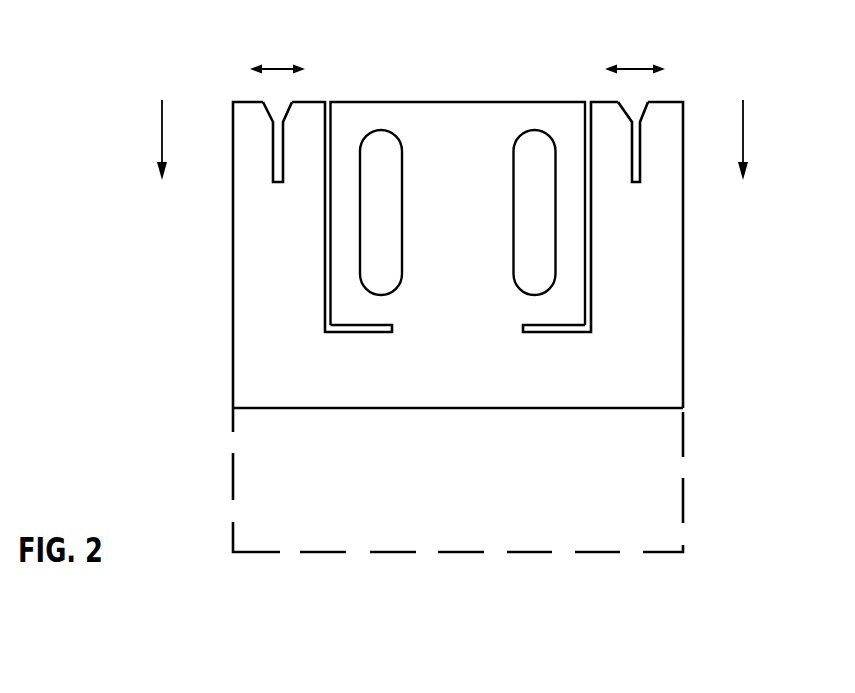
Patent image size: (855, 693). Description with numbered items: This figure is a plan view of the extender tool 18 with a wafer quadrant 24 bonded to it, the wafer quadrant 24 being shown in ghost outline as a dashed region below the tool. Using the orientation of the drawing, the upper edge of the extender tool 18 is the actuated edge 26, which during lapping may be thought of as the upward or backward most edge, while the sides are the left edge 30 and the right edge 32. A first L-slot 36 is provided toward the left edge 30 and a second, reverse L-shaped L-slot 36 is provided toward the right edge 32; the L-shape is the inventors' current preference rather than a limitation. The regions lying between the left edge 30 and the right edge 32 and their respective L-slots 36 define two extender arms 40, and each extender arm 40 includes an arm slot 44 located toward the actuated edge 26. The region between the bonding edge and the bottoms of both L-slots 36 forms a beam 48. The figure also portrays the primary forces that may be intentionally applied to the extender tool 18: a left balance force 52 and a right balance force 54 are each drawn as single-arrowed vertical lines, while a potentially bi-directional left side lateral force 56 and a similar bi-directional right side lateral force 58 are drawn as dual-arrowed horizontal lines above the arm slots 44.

The extender tool 18 is at (472, 173).
The wafer quadrant 24 is at (474, 490).
The actuated edge 26 is at (470, 85).
The left edge 30 is at (222, 294).
The right edge 32 is at (693, 294).
The L-slot 36 is at (327, 143).
The extender arm 40 is at (268, 248).
The arm slot 44 is at (278, 140).
The beam 48 is at (303, 376).
The left balance force 52 is at (160, 124).
The right balance force 54 is at (745, 124).
The left side lateral force 56 is at (273, 66).
The right side lateral force 58 is at (642, 66).